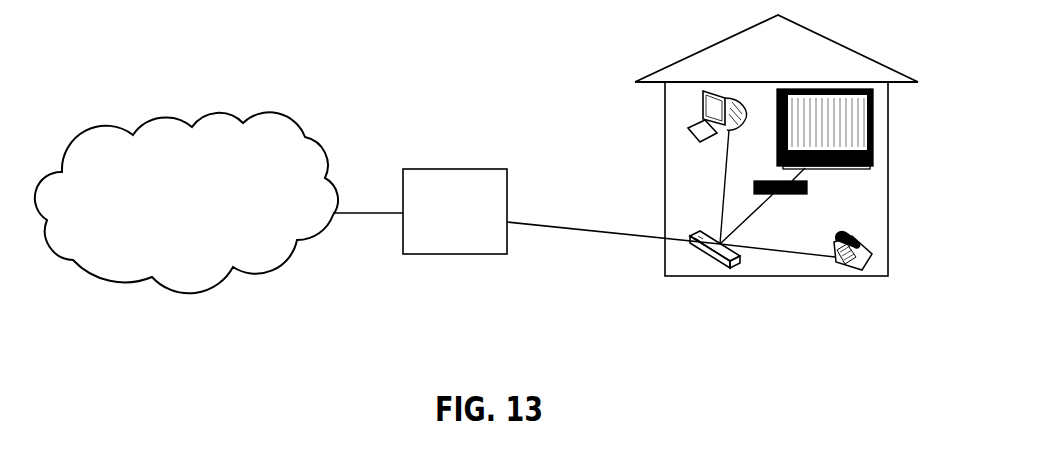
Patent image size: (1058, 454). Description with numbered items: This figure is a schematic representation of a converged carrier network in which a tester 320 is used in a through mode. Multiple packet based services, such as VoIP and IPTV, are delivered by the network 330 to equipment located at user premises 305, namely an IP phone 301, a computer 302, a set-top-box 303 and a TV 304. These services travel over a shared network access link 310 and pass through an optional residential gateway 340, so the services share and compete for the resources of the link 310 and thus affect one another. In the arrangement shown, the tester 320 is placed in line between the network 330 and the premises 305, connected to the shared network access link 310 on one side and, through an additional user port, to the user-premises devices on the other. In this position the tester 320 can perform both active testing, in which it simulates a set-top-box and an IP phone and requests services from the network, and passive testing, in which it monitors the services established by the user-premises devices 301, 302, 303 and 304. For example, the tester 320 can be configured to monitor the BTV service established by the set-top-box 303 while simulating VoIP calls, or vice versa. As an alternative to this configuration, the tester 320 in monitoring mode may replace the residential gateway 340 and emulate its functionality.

The network 330 is at (192, 127).
The tester 320 is at (452, 254).
The shared network access link 310 is at (587, 230).
The user premises 305 is at (688, 276).
The computer 302 is at (710, 93).
The TV 304 is at (877, 125).
The set-top-box 303 is at (807, 191).
The residential gateway 340 is at (733, 267).
The IP phone 301 is at (856, 263).